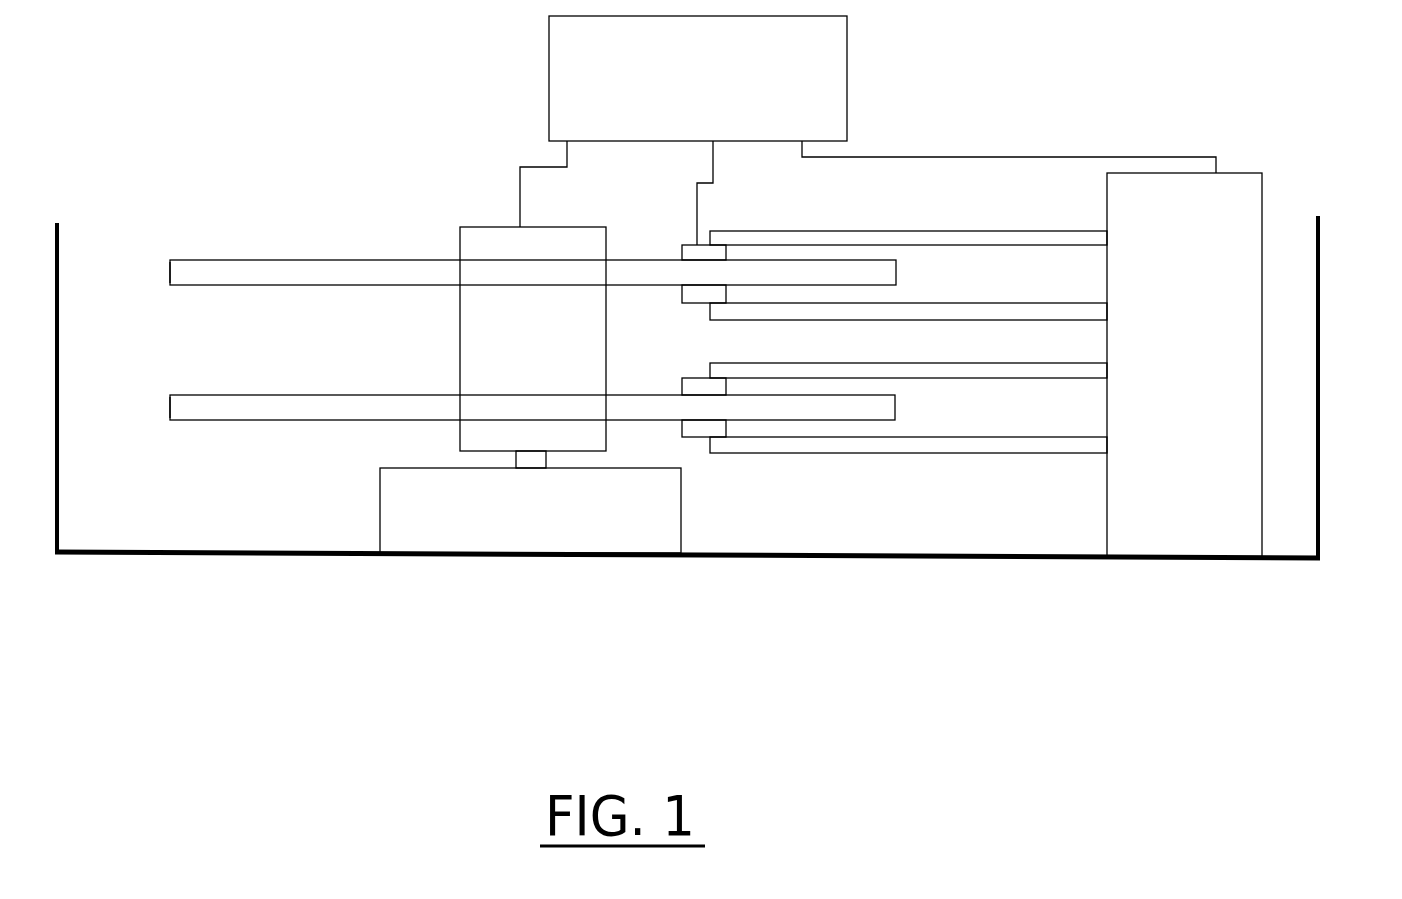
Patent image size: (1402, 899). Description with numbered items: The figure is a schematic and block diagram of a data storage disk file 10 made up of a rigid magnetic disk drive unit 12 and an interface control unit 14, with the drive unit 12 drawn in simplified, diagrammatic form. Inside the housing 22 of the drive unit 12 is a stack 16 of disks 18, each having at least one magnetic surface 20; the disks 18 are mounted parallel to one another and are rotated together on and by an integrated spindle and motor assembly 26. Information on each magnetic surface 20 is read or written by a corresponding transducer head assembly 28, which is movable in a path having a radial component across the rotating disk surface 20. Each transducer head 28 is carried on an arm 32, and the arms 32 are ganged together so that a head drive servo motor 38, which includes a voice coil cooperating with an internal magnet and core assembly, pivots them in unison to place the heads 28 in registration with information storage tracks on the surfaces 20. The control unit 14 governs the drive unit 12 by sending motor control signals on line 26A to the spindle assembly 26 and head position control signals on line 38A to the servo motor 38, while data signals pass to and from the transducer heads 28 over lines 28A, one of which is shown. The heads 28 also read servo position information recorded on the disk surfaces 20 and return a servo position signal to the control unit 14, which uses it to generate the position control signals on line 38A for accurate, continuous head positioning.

The data storage disk file 10 is at (1082, 120).
The rigid magnetic disk drive unit 12 is at (246, 451).
The interface control unit 14 is at (698, 78).
The stack 16 is at (415, 225).
The disk 18 is at (170, 270).
The magnetic surface 20 is at (317, 253).
The container 22 is at (1320, 457).
The integrated spindle and motor assembly 26 is at (530, 390).
The line 26A is at (515, 184).
The transducer head assembly 28 is at (682, 245).
The line 28A is at (686, 193).
The arm 32 is at (835, 231).
The head drive servo motor 38 is at (1184, 365).
The line 38A is at (1009, 149).